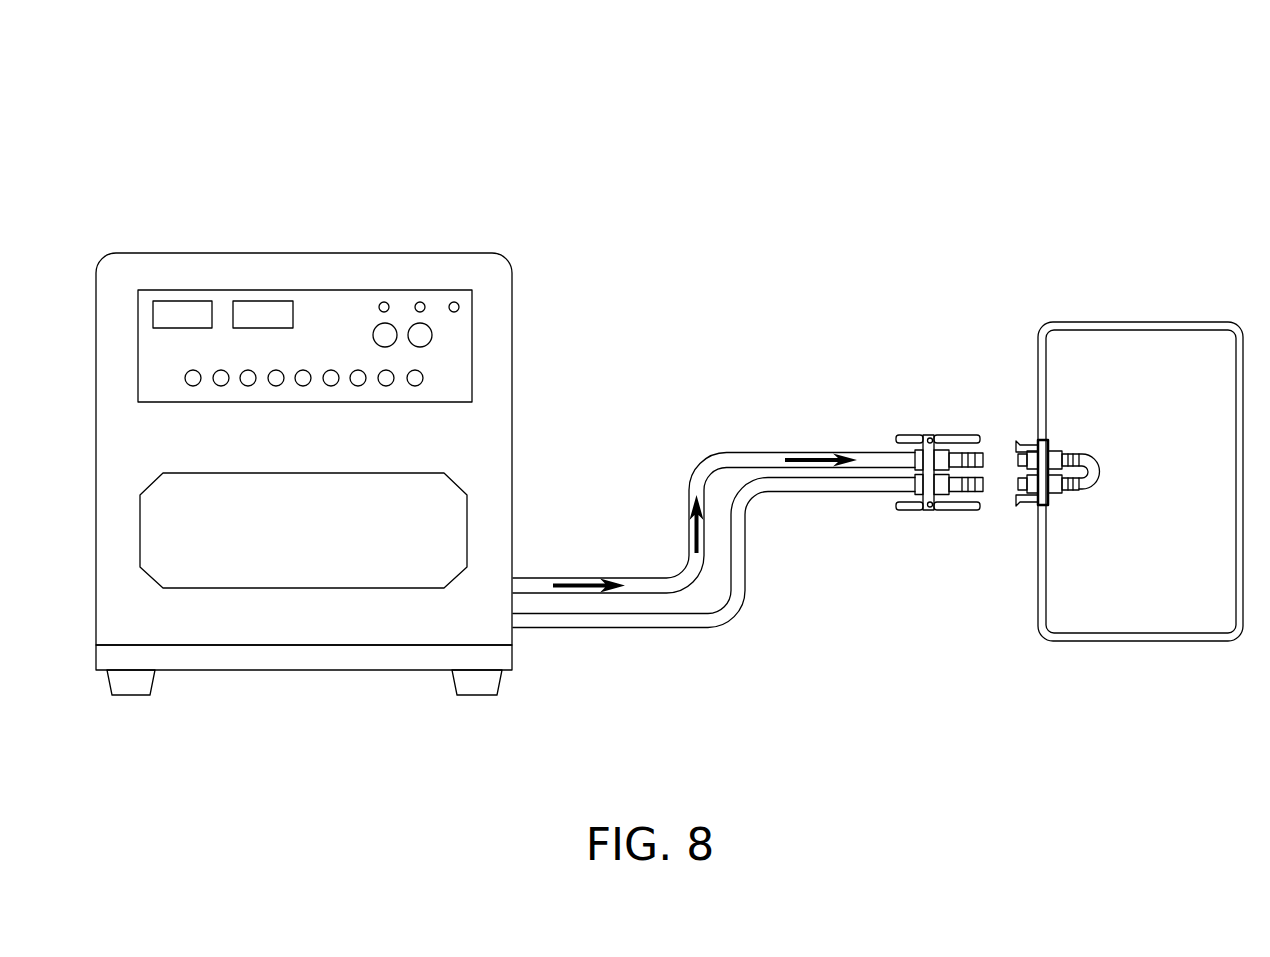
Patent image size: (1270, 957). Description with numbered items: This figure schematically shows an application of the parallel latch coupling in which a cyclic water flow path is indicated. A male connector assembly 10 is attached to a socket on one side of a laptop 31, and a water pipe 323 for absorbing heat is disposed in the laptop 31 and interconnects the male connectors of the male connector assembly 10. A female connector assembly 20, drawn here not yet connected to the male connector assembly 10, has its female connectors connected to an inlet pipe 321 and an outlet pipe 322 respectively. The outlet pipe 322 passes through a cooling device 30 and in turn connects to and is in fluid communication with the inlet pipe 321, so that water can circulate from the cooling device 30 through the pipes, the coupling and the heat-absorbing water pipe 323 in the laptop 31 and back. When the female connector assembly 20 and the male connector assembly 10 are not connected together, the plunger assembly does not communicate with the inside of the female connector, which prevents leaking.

The male connector assembly 10 is at (1019, 516).
The female connector assembly 20 is at (936, 518).
The cooling device 30 is at (305, 268).
The laptop 31 is at (1137, 353).
The inlet pipe 321 is at (742, 459).
The outlet pipe 322 is at (785, 483).
The water pipe 323 is at (1088, 473).